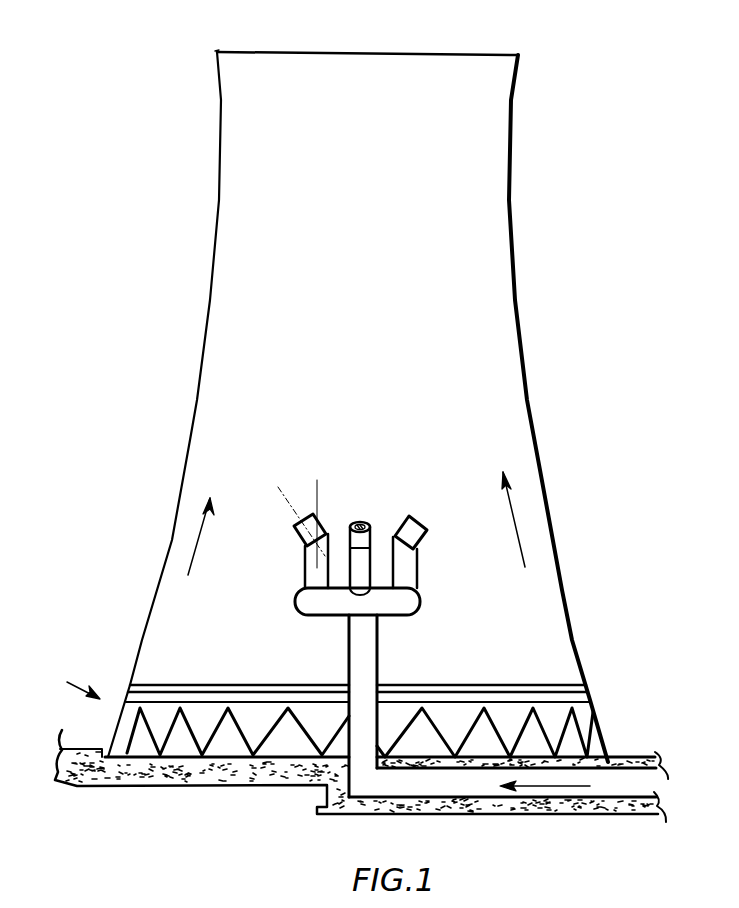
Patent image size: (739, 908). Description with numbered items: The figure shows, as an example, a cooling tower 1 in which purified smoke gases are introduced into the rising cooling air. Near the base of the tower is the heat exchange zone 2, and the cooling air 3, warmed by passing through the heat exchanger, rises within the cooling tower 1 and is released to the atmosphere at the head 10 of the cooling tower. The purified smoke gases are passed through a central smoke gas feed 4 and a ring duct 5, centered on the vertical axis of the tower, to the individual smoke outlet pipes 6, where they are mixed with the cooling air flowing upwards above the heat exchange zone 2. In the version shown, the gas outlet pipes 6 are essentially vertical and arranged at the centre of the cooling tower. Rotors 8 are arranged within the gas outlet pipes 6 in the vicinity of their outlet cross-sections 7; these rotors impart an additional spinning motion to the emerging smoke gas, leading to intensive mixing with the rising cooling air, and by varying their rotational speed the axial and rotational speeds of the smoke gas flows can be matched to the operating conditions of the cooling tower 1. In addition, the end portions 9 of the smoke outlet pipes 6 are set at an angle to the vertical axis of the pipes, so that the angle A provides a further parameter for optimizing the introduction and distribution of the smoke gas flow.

The cooling tower 1 is at (530, 416).
The heat exchange zone 2 is at (545, 718).
The cooling air 3 is at (594, 704).
The central smoke gas feed 4 is at (377, 647).
The ring duct 5 is at (412, 599).
The smoke outlet pipes 6 is at (305, 570).
The outlet cross-sections 7 is at (424, 520).
The rotors 8 is at (358, 524).
The end portions 9 is at (405, 532).
The head of the cooling tower 10 is at (430, 52).
The angle A is at (317, 484).